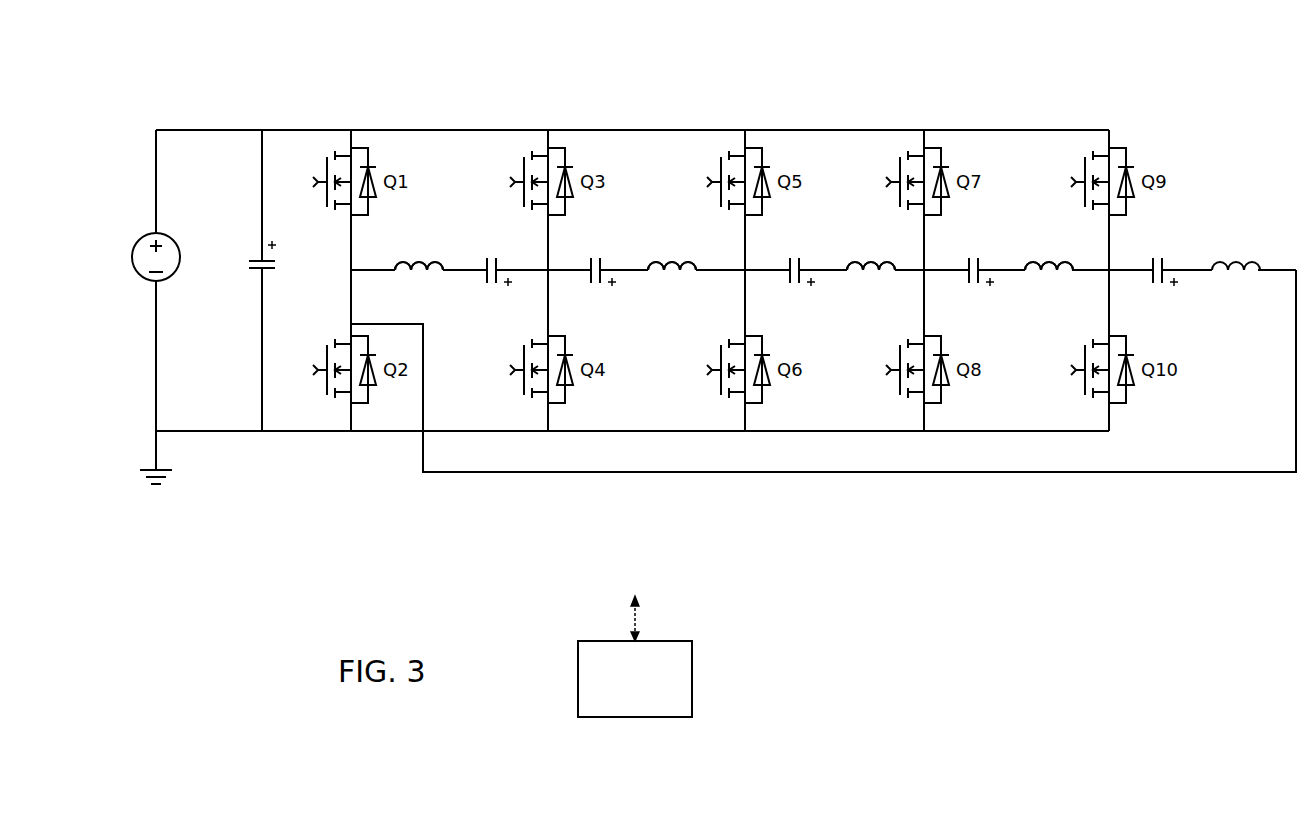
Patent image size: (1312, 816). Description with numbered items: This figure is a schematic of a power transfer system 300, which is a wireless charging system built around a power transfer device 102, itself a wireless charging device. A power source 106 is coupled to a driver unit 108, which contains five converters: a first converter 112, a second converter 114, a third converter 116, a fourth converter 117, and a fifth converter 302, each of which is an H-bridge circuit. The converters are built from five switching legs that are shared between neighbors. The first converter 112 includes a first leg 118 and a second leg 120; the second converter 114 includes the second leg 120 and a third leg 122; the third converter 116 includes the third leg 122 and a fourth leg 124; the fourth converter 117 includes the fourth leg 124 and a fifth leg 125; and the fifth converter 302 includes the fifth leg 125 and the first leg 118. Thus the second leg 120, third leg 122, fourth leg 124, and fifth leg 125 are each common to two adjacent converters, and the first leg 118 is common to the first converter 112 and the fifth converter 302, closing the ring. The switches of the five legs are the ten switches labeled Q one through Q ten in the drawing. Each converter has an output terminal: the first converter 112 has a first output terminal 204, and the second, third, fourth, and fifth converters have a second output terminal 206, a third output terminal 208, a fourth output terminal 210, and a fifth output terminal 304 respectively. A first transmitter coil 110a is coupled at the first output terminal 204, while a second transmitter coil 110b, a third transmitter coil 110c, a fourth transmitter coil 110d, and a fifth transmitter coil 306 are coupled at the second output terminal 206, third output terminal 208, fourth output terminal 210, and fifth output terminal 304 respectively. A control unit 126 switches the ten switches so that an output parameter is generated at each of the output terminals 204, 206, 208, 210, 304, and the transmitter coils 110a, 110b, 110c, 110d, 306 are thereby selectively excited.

The power transfer device 102 is at (133, 581).
The power source 106 is at (137, 242).
The driver unit 108 is at (327, 539).
The first transmitter coil 110a is at (418, 262).
The second transmitter coil 110b is at (671, 262).
The third transmitter coil 110c is at (870, 262).
The fourth transmitter coil 110d is at (1048, 262).
The first converter 112 is at (318, 121).
The second converter 114 is at (520, 108).
The third converter 116 is at (710, 94).
The fourth converter 117 is at (882, 122).
The first leg 118 is at (351, 420).
The second leg 120 is at (548, 420).
The third leg 122 is at (745, 420).
The fourth leg 124 is at (924, 420).
The fifth leg 125 is at (1109, 420).
The control unit 126 is at (695, 677).
The first output terminal 204 is at (360, 292).
The second output terminal 206 is at (555, 292).
The third output terminal 208 is at (755, 292).
The fourth output terminal 210 is at (935, 292).
The power transfer system 300 is at (1066, 657).
The fifth converter 302 is at (326, 34).
The fifth output terminal 304 is at (346, 496).
The fifth transmitter coil 306 is at (1233, 262).